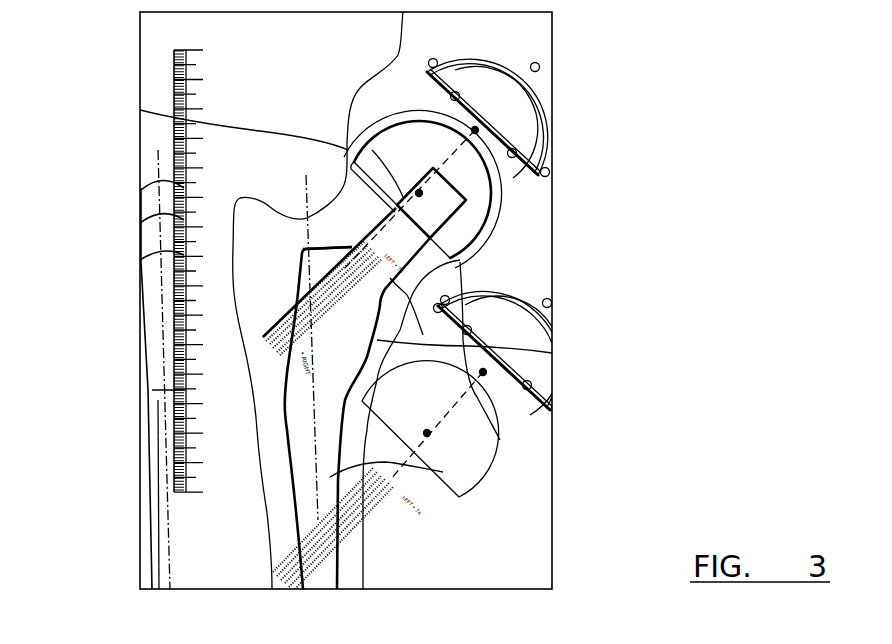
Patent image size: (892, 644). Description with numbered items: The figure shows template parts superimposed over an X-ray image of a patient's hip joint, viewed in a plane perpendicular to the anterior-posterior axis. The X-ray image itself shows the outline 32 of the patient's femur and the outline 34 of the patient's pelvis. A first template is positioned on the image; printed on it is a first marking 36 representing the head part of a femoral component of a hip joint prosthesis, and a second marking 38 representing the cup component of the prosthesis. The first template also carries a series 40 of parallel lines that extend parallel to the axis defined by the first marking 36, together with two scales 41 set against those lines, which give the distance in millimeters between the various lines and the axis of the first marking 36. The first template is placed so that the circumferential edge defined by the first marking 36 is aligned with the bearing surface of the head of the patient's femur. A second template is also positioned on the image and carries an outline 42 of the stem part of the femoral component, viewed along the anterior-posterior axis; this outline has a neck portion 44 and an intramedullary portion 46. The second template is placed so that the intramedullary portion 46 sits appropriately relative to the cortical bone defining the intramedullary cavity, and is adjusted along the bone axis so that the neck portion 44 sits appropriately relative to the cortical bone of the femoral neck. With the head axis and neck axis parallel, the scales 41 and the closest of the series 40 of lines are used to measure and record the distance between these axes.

The outline of the patient's femur 32 is at (375, 455).
The outline of the patient's pelvis 34 is at (536, 44).
The first marking 36 is at (490, 200).
The second marking 38 is at (512, 110).
The series of parallel lines 40 is at (458, 262).
The scales 41 is at (464, 233).
The outline of the stem part 42 is at (553, 352).
The neck portion 44 is at (178, 119).
The intramedullary portion 46 is at (443, 472).